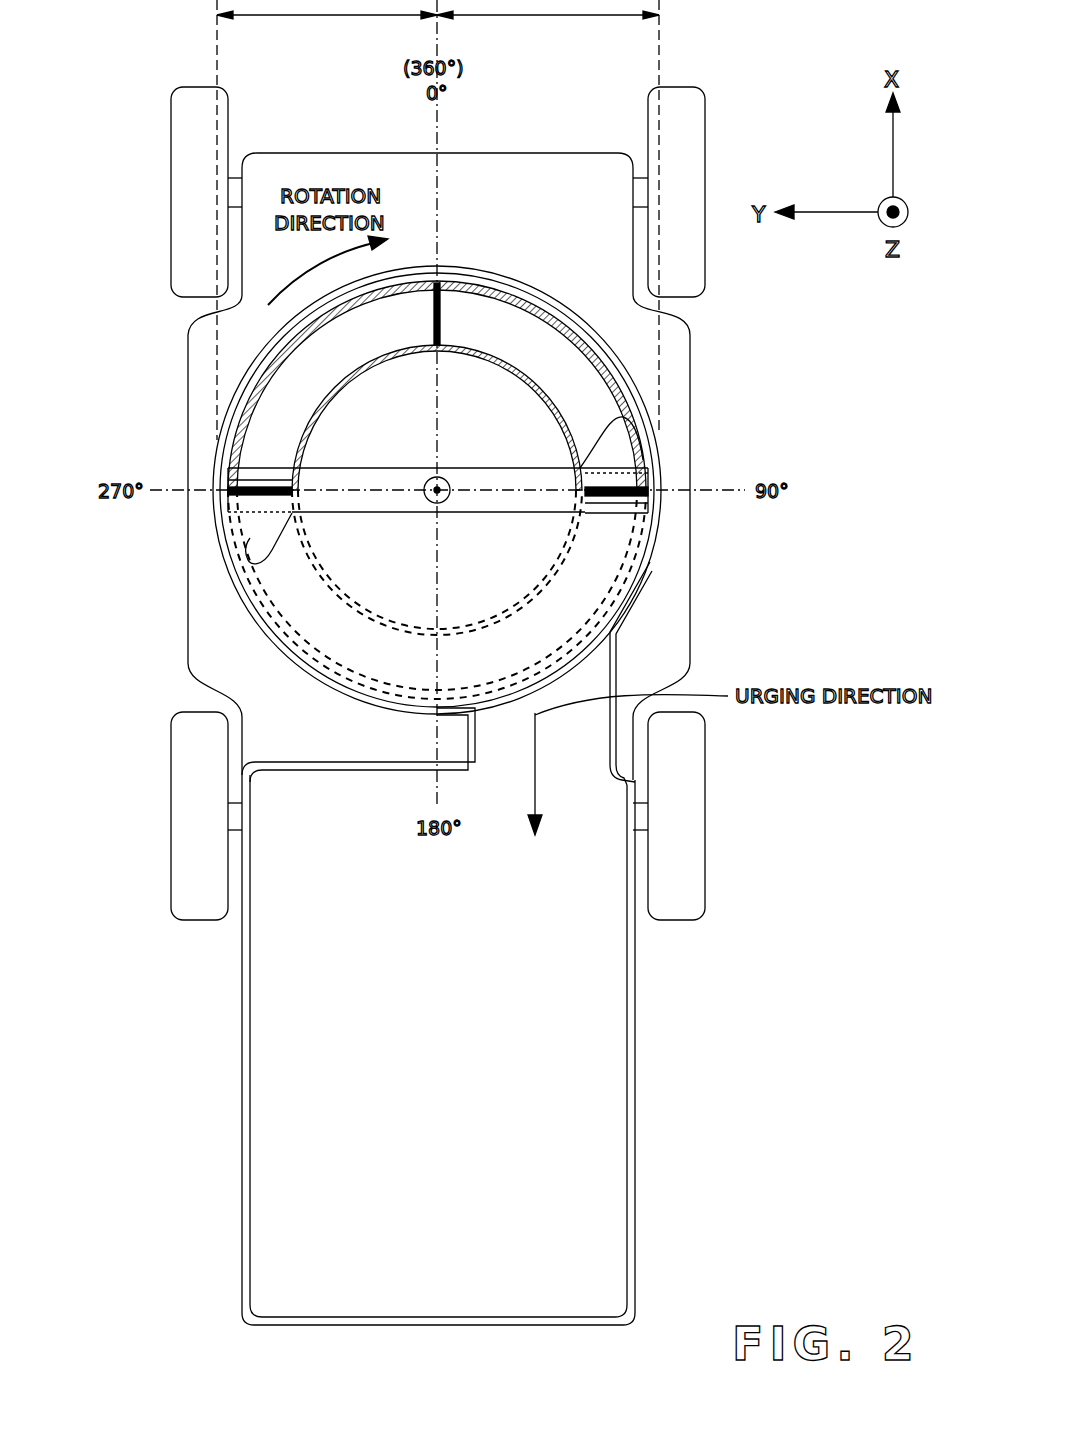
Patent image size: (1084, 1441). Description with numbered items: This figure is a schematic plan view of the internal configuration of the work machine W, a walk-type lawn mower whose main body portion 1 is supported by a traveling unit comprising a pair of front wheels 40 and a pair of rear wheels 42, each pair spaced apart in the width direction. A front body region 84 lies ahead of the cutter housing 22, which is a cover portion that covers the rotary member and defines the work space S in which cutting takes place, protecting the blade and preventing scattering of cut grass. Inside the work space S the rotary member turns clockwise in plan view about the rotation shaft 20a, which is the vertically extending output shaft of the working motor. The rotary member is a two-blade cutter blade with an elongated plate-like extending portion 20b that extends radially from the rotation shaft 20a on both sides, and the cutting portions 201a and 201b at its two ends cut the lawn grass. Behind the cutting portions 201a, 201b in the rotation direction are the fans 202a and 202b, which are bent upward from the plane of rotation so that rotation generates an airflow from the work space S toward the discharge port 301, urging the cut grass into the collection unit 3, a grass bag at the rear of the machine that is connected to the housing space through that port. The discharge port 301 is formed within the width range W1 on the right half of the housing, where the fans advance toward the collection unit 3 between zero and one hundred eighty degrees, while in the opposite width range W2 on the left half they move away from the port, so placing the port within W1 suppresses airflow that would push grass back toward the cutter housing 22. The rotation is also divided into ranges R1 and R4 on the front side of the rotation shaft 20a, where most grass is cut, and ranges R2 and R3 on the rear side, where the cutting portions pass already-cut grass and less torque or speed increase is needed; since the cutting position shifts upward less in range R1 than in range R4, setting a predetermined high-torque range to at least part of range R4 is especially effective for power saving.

The main body portion 1 is at (803, 386).
The collection unit 3 is at (242, 1117).
The front body portion 84 is at (297, 153).
The front wheels 40 is at (170, 228).
The rear wheels 42 is at (170, 800).
The cutter housing 22 is at (230, 395).
The rotation shaft 20a is at (445, 501).
The extending portion 20b is at (560, 520).
The cutting portion 201a is at (250, 468).
The cutting portion 201b is at (645, 520).
The fan 202a is at (268, 544).
The fan 202b is at (605, 422).
The discharge port 301 is at (615, 665).
The work space S is at (477, 400).
The work machine W is at (123, 143).
The range in the width direction W1 is at (548, 31).
The left width W2 is at (327, 31).
The range R1 is at (540, 400).
The range R2 is at (478, 624).
The range R3 is at (362, 598).
The range R4 is at (330, 393).